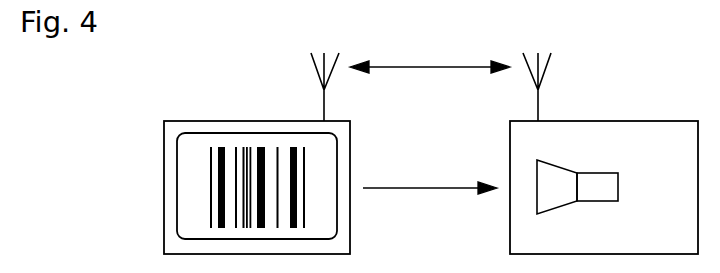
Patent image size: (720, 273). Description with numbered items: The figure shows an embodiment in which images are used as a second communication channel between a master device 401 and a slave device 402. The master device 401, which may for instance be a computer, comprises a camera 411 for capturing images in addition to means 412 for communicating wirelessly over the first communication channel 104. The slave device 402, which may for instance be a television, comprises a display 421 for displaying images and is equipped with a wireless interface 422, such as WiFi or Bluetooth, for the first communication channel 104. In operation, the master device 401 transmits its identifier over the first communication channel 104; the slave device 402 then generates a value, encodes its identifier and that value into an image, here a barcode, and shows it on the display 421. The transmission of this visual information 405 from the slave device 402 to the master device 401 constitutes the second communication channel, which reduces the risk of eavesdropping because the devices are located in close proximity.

The master device 401 is at (657, 121).
The slave device 402 is at (190, 121).
The display 421 is at (177, 187).
The wireless interface 422 is at (318, 53).
The means for communicating wirelessly 412 is at (543, 53).
The first communication channel 104 is at (430, 68).
The visual information 405 is at (445, 188).
The camera 411 is at (618, 188).